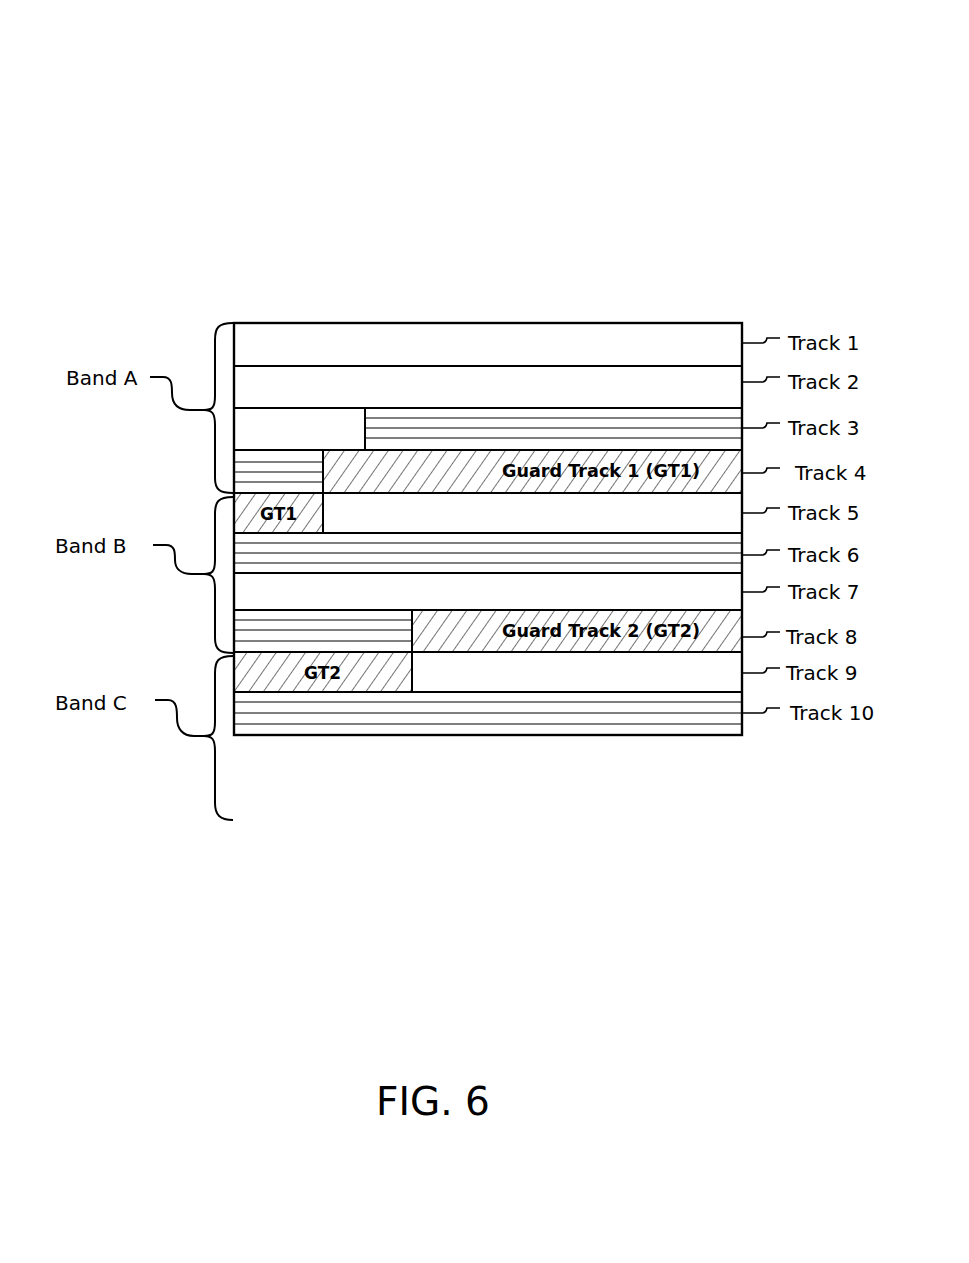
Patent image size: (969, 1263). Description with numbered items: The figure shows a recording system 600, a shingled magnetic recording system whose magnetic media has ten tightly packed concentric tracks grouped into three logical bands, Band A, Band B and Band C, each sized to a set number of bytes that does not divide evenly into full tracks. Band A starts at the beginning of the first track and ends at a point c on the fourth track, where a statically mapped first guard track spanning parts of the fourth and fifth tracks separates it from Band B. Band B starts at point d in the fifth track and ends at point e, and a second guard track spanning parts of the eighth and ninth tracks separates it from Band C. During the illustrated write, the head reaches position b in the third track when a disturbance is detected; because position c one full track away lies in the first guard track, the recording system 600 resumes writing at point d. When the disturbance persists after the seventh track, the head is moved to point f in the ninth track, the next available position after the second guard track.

The recording system 600 is at (128, 70).
The disturbance position b is at (352, 432).
The end point of Band A c is at (337, 470).
The start point of Band B d is at (337, 519).
The end point of Band B e is at (426, 630).
The next available write position after Guard Track 2 f is at (426, 672).